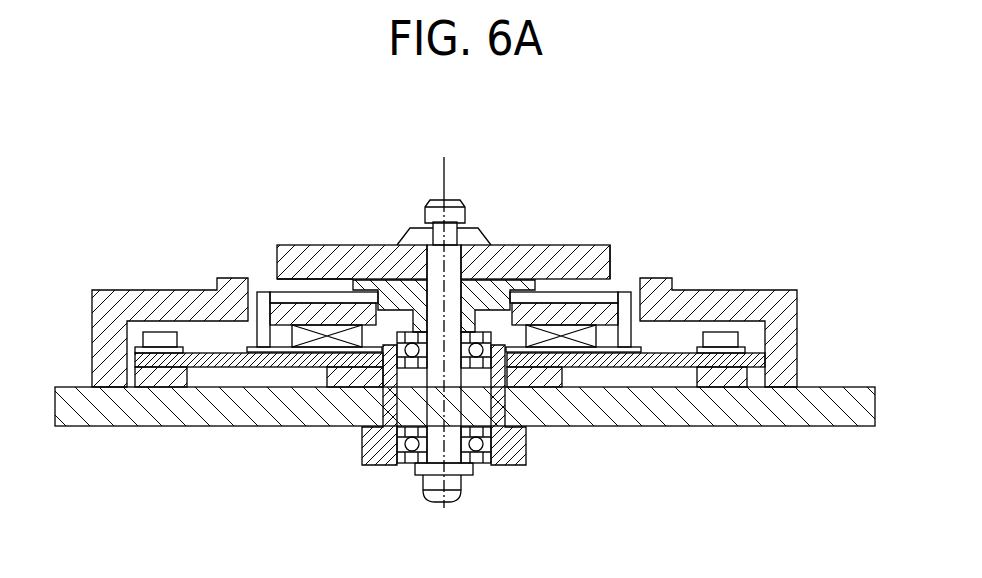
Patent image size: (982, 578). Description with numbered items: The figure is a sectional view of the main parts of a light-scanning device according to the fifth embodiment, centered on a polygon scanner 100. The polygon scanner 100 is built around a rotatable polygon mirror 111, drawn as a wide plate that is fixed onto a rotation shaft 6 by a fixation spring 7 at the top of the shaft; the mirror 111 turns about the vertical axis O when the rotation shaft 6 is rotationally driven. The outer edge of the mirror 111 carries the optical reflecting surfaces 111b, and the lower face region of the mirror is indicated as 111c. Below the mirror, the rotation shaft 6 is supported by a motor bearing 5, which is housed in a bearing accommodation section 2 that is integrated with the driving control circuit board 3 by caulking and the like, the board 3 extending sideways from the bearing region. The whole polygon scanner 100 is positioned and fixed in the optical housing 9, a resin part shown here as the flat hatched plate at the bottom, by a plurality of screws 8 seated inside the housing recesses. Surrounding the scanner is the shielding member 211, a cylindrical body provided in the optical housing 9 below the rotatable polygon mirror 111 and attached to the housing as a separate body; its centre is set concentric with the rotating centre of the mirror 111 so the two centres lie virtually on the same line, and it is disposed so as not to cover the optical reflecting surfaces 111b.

The polygon scanner 100 is at (682, 142).
The rotation axis O is at (447, 173).
The fixation spring 7 is at (413, 229).
The rotatable polygon mirror 111 is at (557, 245).
The optical reflecting surfaces 111b is at (612, 257).
The lower surface portion of rotor plate 111c is at (280, 284).
The screws 8 is at (157, 332).
The shielding member 211 is at (797, 332).
The driving control circuit board 3 is at (242, 367).
The bearing accommodation section 2 is at (518, 382).
The motor bearing 5 is at (400, 412).
The rotation shaft 6 is at (460, 482).
The optical housing 9 is at (807, 427).